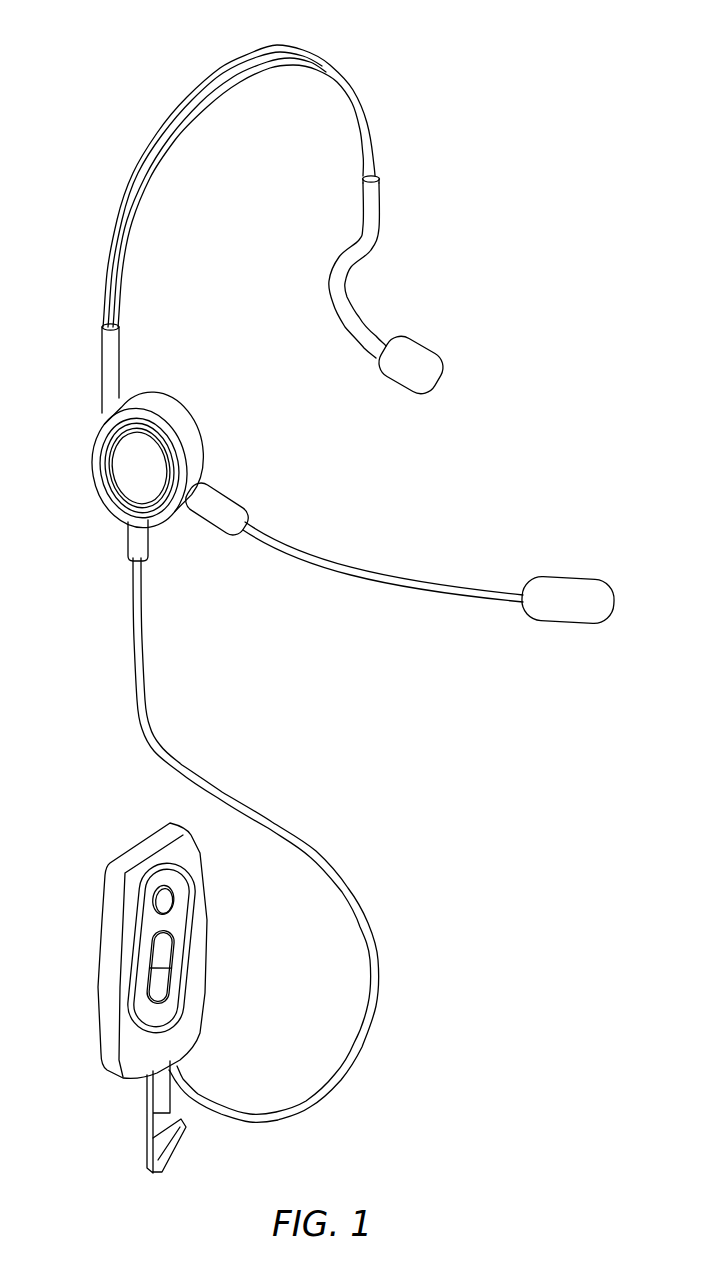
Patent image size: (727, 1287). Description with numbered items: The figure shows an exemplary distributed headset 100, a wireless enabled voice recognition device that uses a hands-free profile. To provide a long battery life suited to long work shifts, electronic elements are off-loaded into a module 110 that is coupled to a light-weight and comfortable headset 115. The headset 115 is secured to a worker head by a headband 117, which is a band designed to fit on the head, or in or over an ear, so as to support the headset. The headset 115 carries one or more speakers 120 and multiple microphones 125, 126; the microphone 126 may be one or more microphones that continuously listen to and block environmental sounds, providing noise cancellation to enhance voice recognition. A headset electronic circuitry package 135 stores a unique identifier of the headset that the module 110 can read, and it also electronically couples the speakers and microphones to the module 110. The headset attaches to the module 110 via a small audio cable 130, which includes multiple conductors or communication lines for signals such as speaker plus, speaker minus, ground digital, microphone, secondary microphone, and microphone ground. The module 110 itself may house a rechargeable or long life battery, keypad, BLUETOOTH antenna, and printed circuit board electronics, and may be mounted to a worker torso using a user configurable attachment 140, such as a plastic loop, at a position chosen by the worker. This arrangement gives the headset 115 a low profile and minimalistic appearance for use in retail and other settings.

The distributed headset 100 is at (537, 57).
The module 110 is at (100, 962).
The headset 115 is at (166, 400).
The headband 117 is at (182, 91).
The speaker 120 is at (424, 348).
The microphone 125 is at (564, 578).
The microphone 126 is at (128, 464).
The audio cable 130 is at (284, 824).
The headset electronic circuitry package 135 is at (174, 917).
The user configurable attachment 140 is at (145, 1100).